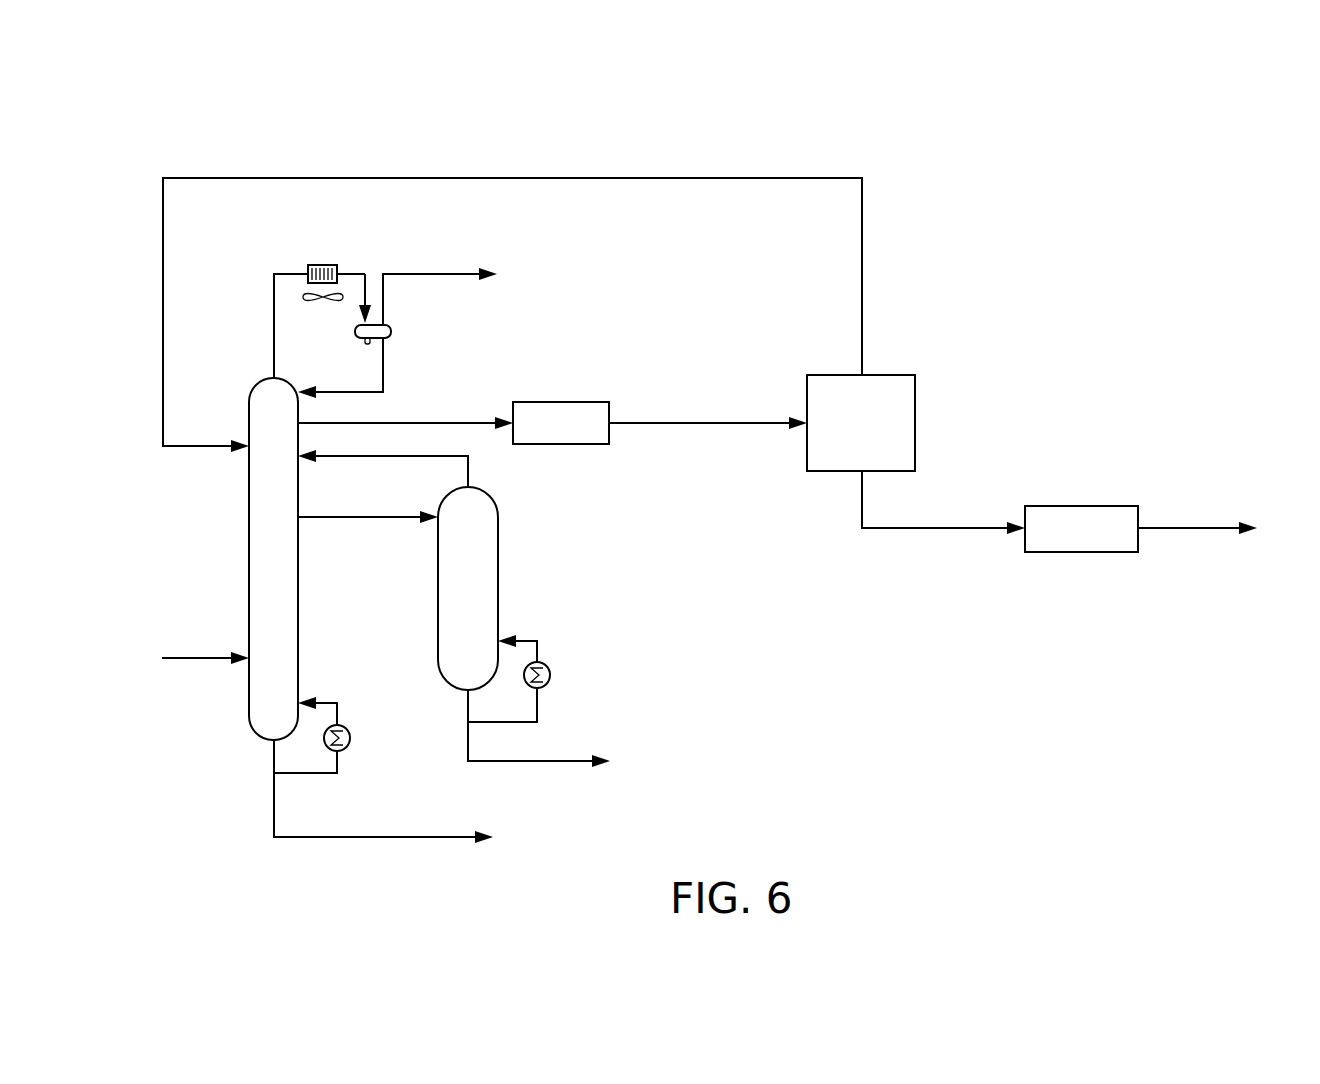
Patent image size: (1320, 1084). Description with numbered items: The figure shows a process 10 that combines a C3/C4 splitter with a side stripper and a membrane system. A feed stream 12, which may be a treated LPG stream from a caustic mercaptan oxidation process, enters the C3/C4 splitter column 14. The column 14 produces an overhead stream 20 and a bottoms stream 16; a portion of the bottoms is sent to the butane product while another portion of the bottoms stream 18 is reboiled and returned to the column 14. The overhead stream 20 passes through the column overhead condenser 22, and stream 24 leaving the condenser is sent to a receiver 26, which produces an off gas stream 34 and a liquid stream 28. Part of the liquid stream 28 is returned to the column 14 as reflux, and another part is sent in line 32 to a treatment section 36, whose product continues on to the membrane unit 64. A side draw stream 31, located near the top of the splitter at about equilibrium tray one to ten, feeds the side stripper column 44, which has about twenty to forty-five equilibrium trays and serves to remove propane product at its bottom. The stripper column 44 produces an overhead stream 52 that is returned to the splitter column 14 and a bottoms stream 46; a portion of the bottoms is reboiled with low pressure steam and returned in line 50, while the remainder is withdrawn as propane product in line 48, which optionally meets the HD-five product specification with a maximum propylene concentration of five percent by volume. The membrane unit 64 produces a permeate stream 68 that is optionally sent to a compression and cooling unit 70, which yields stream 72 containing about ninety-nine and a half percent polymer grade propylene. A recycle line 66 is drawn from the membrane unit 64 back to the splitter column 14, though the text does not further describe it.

The process 10 is at (1203, 142).
The stream 12 is at (175, 655).
The column 14 is at (298, 615).
The bottoms stream 16 is at (352, 838).
The bottoms stream 18 is at (338, 757).
The overhead stream 20 is at (274, 297).
The column overhead condenser 22 is at (323, 264).
The stream 24 is at (358, 273).
The receiver 26 is at (391, 331).
The liquid stream 28 is at (380, 394).
The side draw stream 31 is at (368, 518).
The line 32 is at (467, 422).
The off gas stream 34 is at (445, 273).
The treatment section 36 is at (562, 400).
The column 44 is at (498, 575).
The bottoms stream 46 is at (468, 707).
The line 48 is at (468, 745).
The line 50 is at (537, 697).
The overhead stream 52 is at (468, 472).
The membrane unit 64 is at (915, 420).
The recycle stream 66 is at (692, 177).
The permeate stream 68 is at (944, 530).
The compression and cooling unit 70 is at (1082, 504).
The stream 72 is at (1182, 530).